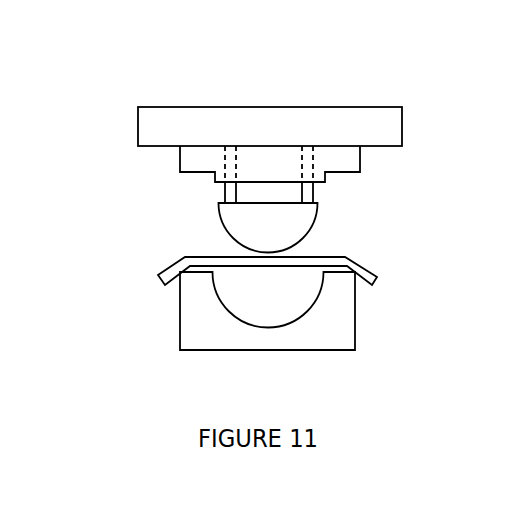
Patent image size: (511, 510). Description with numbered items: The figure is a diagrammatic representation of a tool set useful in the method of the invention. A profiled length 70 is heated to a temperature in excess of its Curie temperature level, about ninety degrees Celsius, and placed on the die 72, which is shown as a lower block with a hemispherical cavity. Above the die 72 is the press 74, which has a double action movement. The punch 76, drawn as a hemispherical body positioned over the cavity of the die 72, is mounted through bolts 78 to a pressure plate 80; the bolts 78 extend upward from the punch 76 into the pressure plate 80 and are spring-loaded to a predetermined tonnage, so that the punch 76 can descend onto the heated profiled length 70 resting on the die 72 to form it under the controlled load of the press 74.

The profiled length 70 is at (187, 260).
The die 72 is at (188, 335).
The press 74 is at (150, 130).
The punch 76 is at (302, 220).
The bolts 78 is at (230, 195).
The pressure plate 80 is at (385, 128).